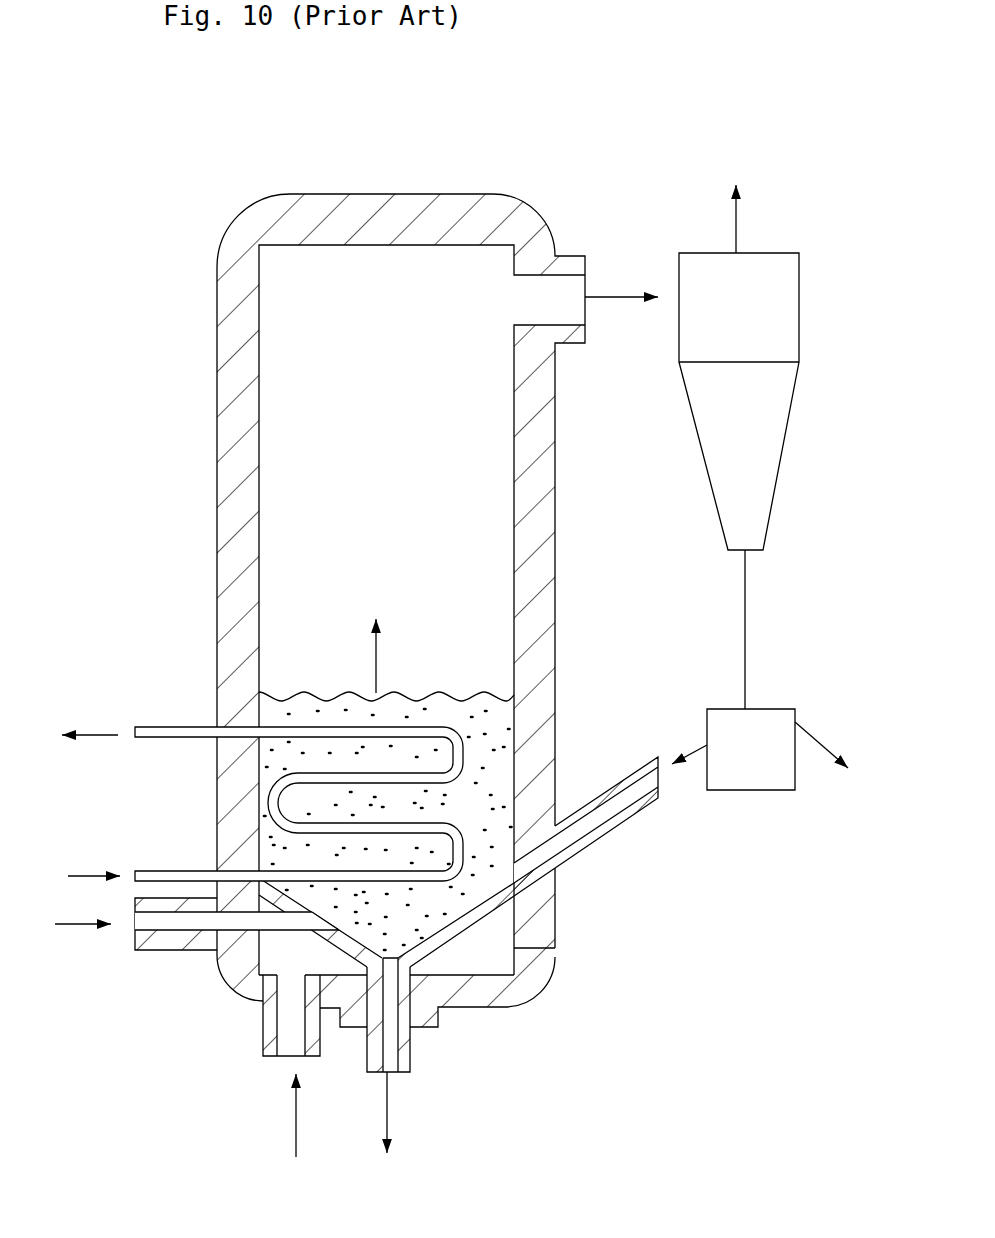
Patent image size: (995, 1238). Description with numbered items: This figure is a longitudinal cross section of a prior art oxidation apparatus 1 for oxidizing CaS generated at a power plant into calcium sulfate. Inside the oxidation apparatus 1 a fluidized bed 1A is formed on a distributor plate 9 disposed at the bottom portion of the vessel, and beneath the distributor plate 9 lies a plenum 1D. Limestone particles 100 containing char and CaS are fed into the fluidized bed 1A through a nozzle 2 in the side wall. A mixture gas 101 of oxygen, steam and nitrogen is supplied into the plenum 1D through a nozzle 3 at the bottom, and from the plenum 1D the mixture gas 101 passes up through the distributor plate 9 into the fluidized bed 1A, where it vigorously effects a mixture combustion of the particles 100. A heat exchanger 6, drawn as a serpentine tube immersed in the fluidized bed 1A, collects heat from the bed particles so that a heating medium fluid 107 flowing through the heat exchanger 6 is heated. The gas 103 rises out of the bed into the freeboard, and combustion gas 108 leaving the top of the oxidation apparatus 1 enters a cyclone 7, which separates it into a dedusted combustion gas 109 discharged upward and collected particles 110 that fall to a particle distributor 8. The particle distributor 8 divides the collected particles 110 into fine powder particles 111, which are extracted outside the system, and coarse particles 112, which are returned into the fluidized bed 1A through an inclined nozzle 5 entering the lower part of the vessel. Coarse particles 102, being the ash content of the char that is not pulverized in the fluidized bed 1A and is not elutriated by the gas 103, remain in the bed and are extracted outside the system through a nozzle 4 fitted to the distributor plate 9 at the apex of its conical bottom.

The oxidation apparatus 1 is at (215, 503).
The fluidized bed 1A is at (288, 752).
The plenum 1D is at (510, 1002).
The nozzle 2 is at (190, 950).
The nozzle 3 is at (258, 1045).
The nozzle 4 is at (410, 1050).
The nozzle 5 is at (618, 828).
The heat exchanger 6 is at (155, 728).
The cyclone 7 is at (800, 336).
The particle distributor 8 is at (756, 791).
The distributor plate 9 is at (483, 917).
The limestone particles 100 is at (75, 925).
The mixture gas 101 is at (296, 1123).
The coarse particles 102 is at (388, 1107).
The gas 103 is at (376, 654).
The heating medium fluid 107 is at (78, 876).
The combustion gas 108 is at (607, 272).
The dedusted combustion gas 109 is at (737, 222).
The collected particles 110 is at (748, 632).
The fine powder particles 111 is at (822, 745).
The coarse particles 112 is at (700, 742).